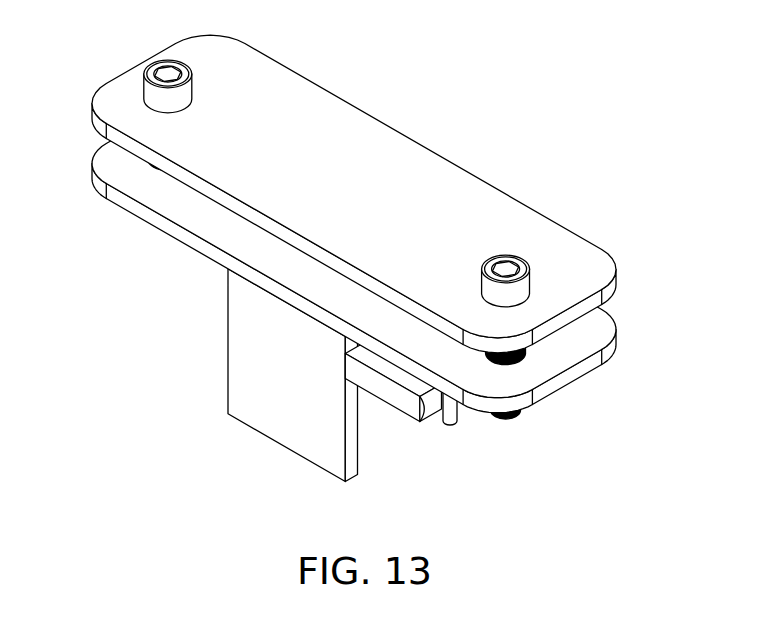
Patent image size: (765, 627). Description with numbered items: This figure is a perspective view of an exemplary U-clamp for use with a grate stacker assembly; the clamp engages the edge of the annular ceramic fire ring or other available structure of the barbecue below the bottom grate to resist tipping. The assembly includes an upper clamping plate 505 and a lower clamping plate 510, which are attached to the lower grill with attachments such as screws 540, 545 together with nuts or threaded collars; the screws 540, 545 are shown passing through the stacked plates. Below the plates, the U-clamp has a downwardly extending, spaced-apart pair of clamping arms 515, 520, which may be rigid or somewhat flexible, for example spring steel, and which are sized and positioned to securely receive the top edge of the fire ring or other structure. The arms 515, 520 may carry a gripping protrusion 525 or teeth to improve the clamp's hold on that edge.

The upper clamping plate 505 is at (435, 163).
The lower clamping plate 510 is at (185, 207).
The clamping arm 515 is at (448, 418).
The clamping arm 520 is at (350, 470).
The gripping protrusion 525 is at (382, 385).
The screw 540 is at (185, 95).
The screw 545 is at (487, 287).